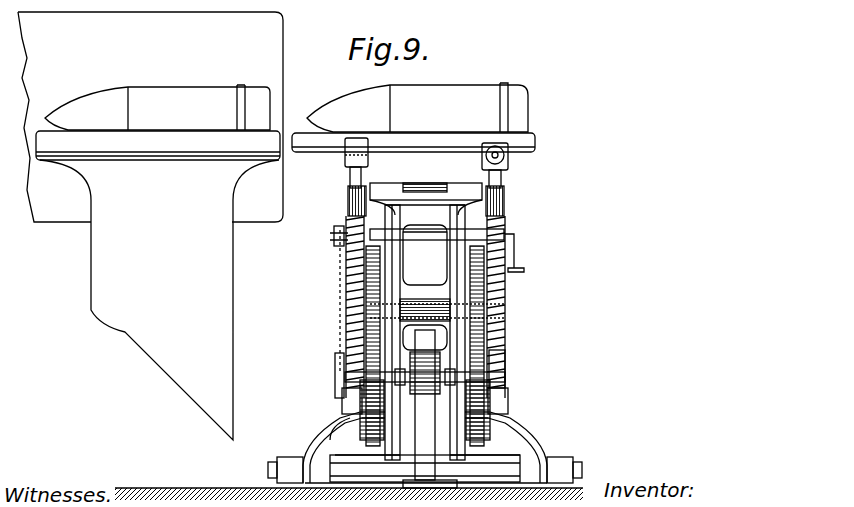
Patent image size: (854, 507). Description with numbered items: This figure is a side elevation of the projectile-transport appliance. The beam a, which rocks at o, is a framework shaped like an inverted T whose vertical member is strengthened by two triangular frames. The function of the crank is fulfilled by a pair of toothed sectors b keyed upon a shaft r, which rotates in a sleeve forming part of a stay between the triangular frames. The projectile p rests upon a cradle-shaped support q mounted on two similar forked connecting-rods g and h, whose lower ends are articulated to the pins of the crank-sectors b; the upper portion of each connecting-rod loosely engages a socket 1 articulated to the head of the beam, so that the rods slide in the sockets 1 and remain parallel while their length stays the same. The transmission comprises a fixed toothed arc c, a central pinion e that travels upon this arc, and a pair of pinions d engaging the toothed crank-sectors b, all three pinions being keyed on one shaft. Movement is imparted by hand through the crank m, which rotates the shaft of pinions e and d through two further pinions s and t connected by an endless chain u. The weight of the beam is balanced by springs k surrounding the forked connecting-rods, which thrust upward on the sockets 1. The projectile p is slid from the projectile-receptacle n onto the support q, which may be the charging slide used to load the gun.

The projectile-receptacle n is at (159, 143).
The projectile p is at (417, 108).
The support q is at (478, 141).
The forked connecting-rod g is at (508, 165).
The forked connecting-rod h is at (345, 160).
The socket 1 is at (423, 206).
The pinion s is at (330, 248).
The toothed crank-sector b is at (520, 283).
The endless chain u is at (346, 318).
The pinion t is at (340, 366).
The pinion d is at (520, 358).
The crank m is at (524, 268).
The spring k is at (505, 332).
The beam a is at (460, 262).
The shaft r is at (434, 310).
The central pinion e is at (438, 350).
The fixed toothed arc c is at (390, 420).
The rocking point of beam o is at (342, 447).